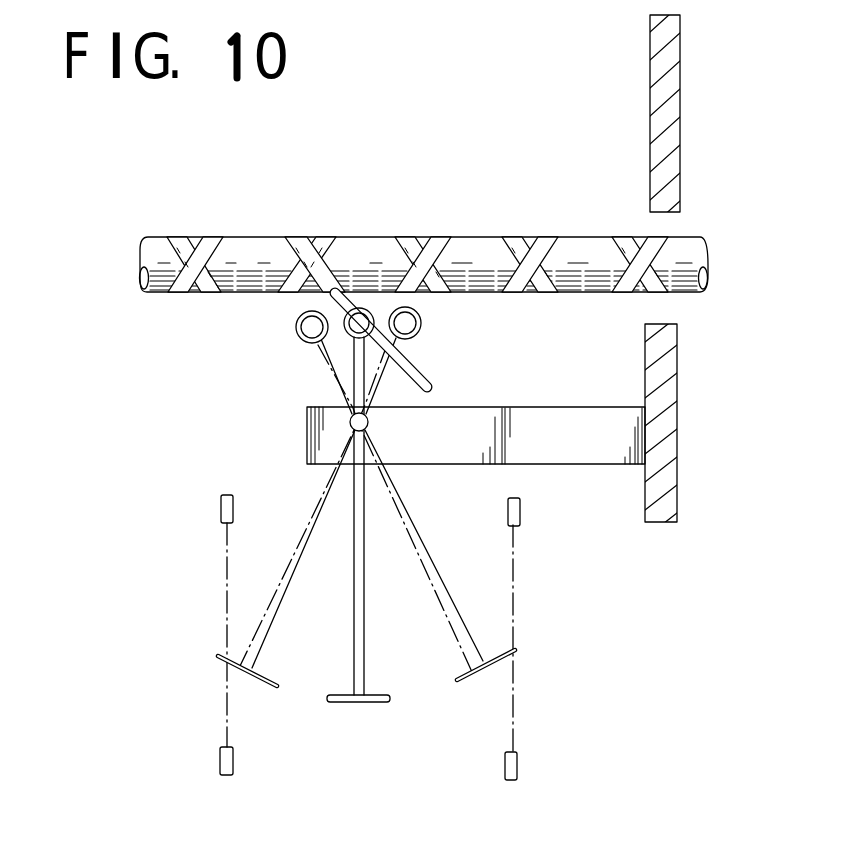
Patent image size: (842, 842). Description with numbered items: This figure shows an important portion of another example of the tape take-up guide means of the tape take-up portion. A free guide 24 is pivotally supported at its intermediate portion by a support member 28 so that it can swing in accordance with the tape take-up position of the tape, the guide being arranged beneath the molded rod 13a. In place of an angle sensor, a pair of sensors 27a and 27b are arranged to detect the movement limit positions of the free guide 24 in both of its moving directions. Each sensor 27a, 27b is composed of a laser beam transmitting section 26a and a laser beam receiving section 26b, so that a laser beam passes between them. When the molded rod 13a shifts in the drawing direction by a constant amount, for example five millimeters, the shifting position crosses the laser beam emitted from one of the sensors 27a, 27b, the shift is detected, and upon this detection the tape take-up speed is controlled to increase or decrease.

The molded rod 13a is at (248, 240).
The free guide 24 is at (353, 359).
The laser beam transmitting section 26a is at (220, 762).
The laser beam receiving section 26b is at (222, 523).
The sensor 27a is at (222, 490).
The sensor 27b is at (515, 494).
The support member 28 is at (462, 464).